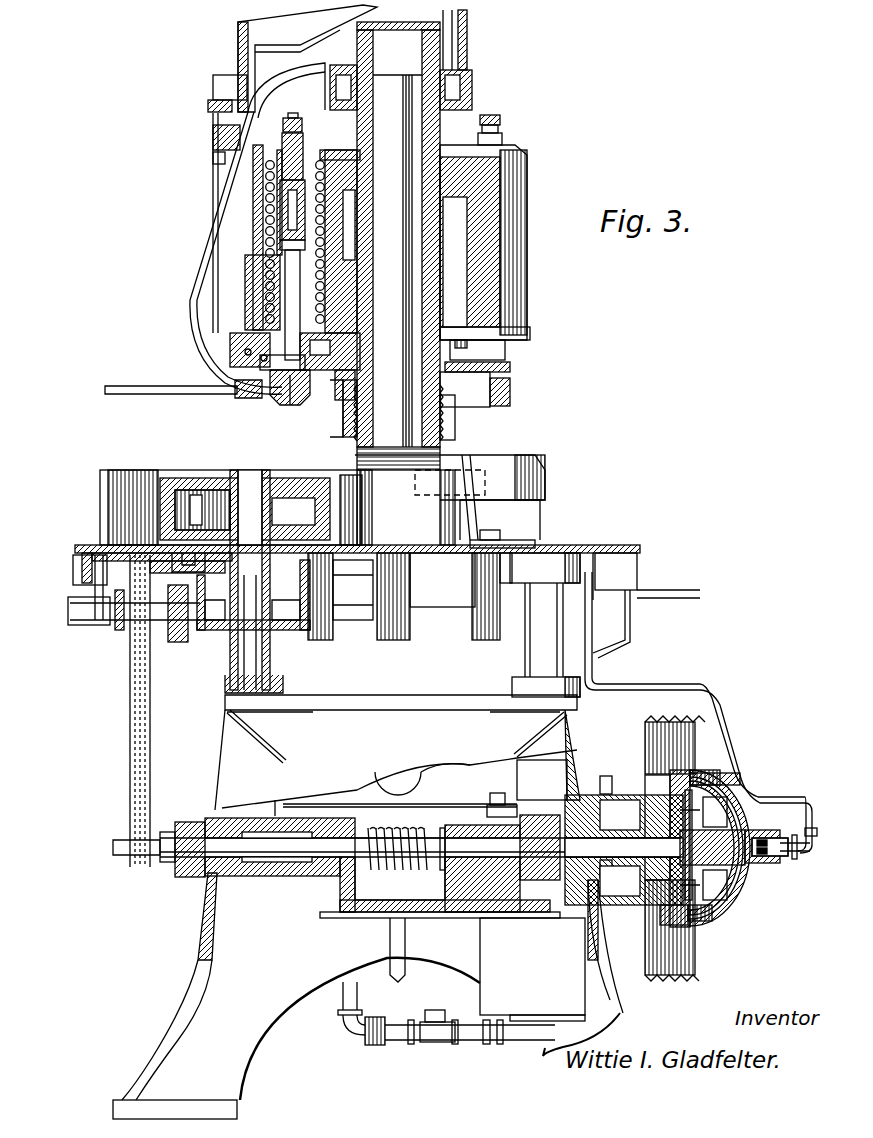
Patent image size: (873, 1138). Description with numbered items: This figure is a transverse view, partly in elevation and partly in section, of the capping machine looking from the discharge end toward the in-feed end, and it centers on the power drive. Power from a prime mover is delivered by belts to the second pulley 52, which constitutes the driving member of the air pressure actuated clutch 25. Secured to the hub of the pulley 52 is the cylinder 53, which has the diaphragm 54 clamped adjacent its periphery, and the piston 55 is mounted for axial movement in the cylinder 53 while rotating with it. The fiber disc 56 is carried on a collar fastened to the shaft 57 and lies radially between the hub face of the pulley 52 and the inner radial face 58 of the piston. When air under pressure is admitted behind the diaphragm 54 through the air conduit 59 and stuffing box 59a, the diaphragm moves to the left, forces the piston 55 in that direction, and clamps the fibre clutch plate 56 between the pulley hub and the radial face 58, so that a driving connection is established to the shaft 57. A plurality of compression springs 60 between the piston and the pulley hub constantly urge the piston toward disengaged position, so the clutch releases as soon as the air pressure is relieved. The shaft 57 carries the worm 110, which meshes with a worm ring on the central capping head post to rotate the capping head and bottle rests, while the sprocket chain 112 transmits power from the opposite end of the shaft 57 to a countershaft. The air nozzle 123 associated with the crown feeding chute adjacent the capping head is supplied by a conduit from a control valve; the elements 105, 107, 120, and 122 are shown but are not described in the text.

The air pressure actuated clutch 25 is at (740, 905).
The second pulley 52 is at (697, 723).
The cylinder 53 is at (705, 770).
The diaphragm 54 is at (745, 803).
The piston 55 is at (735, 892).
The fiber disc 56 is at (688, 870).
The shaft 57 is at (650, 850).
The inner radial face 58 is at (738, 788).
The air conduit 59 is at (775, 840).
The stuffing box 59a is at (785, 860).
The compression springs 60 is at (700, 921).
The spindle chuck 105 is at (337, 497).
The bearing housing 107 is at (300, 503).
The worm 110 is at (412, 832).
The sprocket chain 112 is at (130, 742).
The cover 120 is at (207, 350).
The clutch member 122 is at (297, 402).
The air nozzle 123 is at (225, 400).